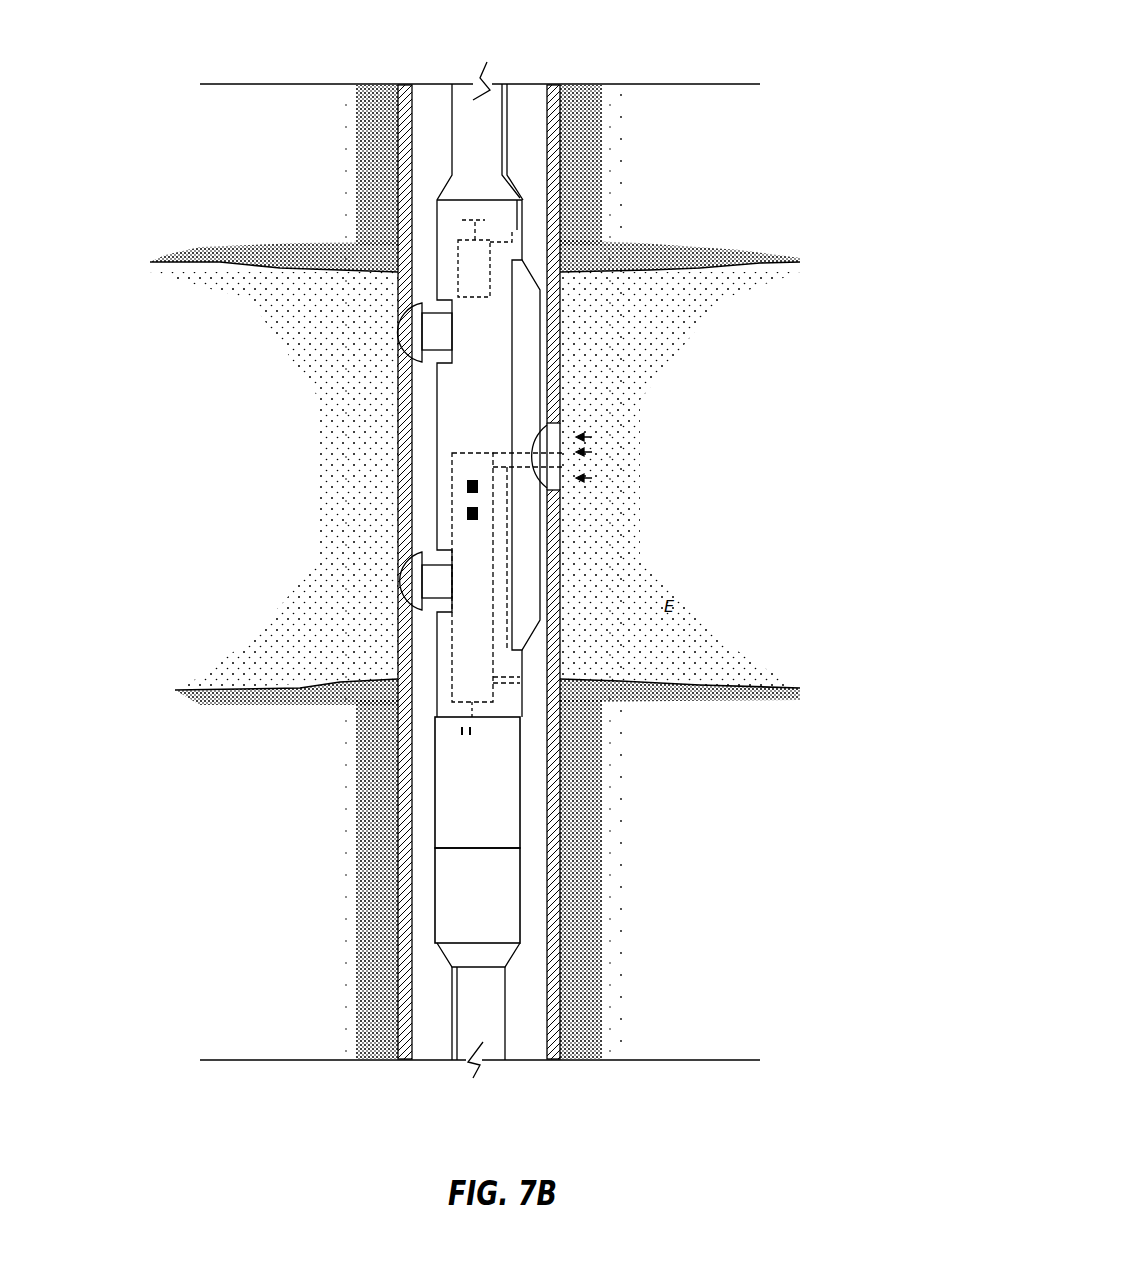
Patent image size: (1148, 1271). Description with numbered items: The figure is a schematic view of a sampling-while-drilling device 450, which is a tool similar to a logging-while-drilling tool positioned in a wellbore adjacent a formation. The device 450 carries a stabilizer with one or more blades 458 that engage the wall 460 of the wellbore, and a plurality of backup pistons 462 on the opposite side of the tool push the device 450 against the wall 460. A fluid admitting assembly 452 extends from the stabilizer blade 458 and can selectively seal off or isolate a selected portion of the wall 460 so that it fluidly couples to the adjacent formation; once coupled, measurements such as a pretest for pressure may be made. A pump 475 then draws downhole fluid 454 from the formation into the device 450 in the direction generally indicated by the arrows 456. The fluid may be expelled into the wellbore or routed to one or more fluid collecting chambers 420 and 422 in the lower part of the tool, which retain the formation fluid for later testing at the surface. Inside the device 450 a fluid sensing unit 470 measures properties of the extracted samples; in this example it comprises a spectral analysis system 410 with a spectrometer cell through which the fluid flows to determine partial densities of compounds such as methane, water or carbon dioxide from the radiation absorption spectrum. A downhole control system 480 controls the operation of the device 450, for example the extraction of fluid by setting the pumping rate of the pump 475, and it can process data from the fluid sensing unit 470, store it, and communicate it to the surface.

The sampling-while-drilling device 450 is at (737, 43).
The wall of the wellbore 460 is at (546, 143).
The downhole fluid 454 is at (650, 292).
The downhole control system 480 is at (470, 265).
The backup pistons 462 is at (400, 330).
The stabilizer blade 458 is at (533, 303).
The fluid admitting assembly 452 is at (535, 445).
The arrows 456 is at (590, 437).
The fluid sensing unit 470 is at (463, 480).
The spectral analysis system 410 is at (473, 520).
The pump 475 is at (465, 657).
The fluid collecting chamber 420 is at (438, 778).
The fluid collecting chamber 422 is at (450, 890).